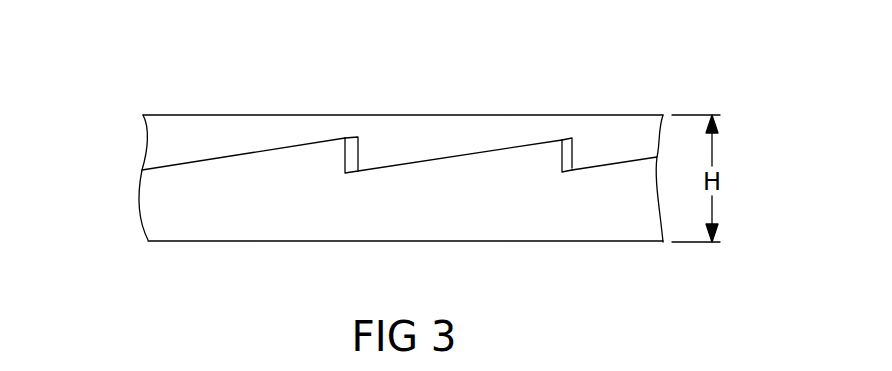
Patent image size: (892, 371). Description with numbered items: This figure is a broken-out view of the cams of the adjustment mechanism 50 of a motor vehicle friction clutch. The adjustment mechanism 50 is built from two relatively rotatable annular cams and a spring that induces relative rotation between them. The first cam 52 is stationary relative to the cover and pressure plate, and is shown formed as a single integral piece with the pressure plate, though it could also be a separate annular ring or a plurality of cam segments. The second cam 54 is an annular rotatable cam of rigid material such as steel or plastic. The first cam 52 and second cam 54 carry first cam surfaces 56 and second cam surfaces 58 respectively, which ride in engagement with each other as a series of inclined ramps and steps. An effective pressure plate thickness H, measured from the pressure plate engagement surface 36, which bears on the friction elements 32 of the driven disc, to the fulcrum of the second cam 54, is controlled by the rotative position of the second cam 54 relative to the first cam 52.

The friction elements 32 is at (152, 213).
The pressure plate engagement surface 36 is at (276, 242).
The adjustment mechanism 50 is at (399, 108).
The first cam 52 is at (206, 162).
The second cam 54 is at (278, 114).
The first cam surfaces 56 is at (455, 152).
The second cam surfaces 58 is at (298, 148).